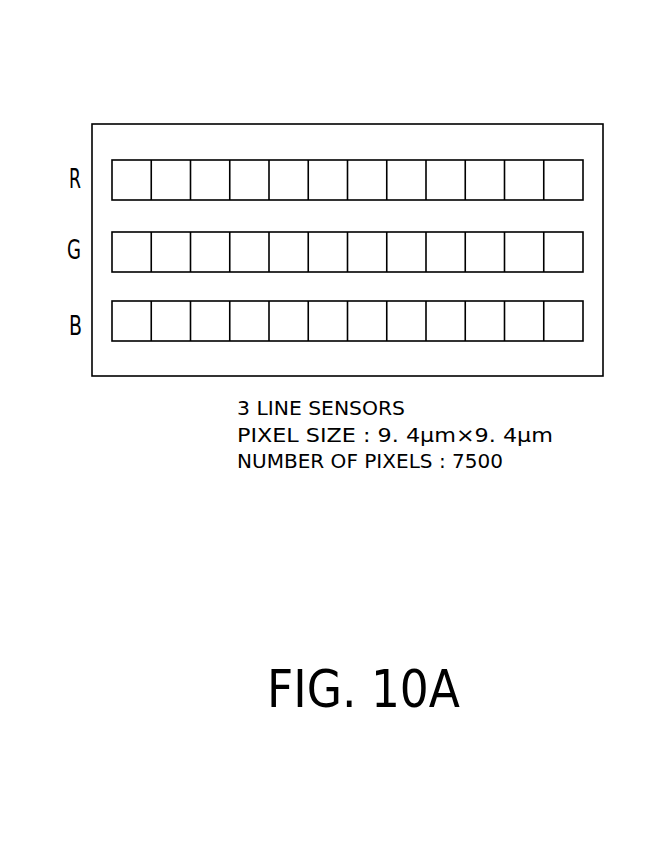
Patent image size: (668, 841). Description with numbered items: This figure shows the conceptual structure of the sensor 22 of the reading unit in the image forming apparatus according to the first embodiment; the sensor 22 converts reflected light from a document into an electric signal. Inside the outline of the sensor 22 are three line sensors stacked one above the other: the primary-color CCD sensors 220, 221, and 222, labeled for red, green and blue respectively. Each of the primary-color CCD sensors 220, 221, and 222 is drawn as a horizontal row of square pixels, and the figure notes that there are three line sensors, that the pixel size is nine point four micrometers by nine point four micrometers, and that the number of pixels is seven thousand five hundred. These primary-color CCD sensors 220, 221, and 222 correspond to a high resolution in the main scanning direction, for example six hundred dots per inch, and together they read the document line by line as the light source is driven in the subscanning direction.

The sensor 22 is at (418, 123).
The primary-color CCD sensor 220 is at (583, 178).
The primary-color CCD sensor 221 is at (583, 249).
The primary-color CCD sensor 222 is at (583, 320).